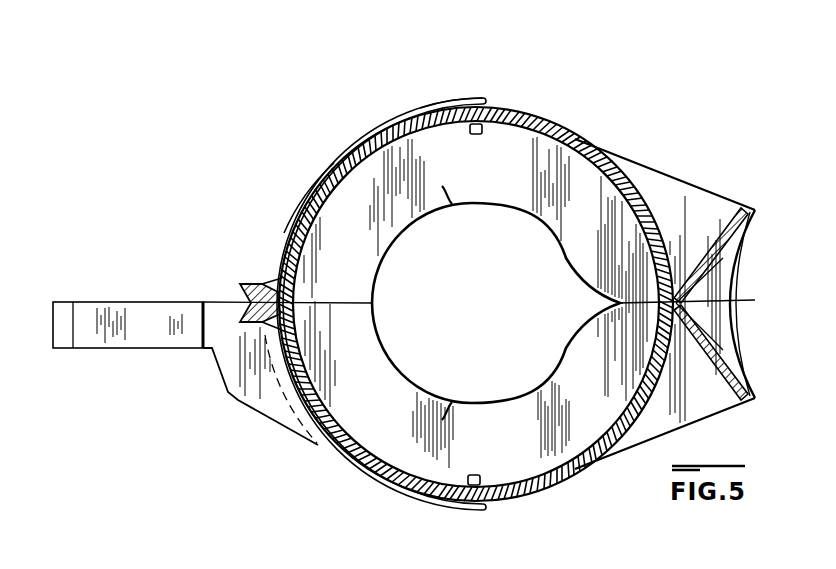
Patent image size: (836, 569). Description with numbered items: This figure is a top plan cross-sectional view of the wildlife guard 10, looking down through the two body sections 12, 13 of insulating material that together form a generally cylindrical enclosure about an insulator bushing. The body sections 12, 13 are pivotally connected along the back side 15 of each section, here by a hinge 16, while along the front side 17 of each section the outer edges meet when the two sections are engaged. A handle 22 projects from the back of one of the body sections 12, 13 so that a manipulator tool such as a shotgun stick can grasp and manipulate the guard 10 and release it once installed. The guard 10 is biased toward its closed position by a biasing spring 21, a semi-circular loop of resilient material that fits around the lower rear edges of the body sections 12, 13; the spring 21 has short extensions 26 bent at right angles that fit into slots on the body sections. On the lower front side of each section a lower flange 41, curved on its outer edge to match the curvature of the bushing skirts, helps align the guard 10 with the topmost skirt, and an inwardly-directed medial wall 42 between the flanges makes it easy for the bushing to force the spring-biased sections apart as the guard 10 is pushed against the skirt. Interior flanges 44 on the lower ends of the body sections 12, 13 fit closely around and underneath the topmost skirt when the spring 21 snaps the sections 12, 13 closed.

The wildlife guard 10 is at (298, 150).
The body section 12 is at (380, 490).
The body section 13 is at (372, 128).
The back side 15 is at (276, 282).
The hinge 16 is at (246, 290).
The front side 17 is at (715, 342).
The biasing spring 21 is at (414, 84).
The handle 22 is at (140, 302).
The short extension 26 is at (480, 110).
The lower flange 41 is at (733, 250).
The medial wall 42 is at (700, 326).
The interior flange 44 is at (528, 165).